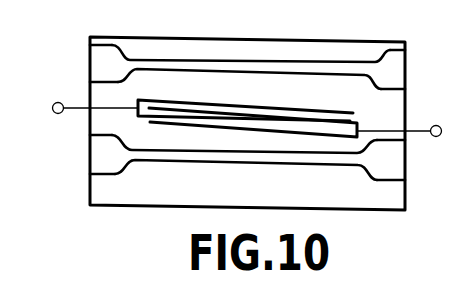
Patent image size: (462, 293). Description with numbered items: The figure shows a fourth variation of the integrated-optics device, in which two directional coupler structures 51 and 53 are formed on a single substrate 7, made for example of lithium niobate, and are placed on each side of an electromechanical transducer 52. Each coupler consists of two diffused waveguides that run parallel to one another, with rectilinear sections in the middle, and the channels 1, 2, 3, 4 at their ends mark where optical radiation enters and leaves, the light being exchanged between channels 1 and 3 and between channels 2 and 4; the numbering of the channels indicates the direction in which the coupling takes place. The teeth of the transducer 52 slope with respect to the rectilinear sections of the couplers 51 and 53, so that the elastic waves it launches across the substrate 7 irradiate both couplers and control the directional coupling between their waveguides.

The substrate 7 is at (328, 41).
The directional coupler structure 51 is at (234, 59).
The electromechanical transducer 52 is at (269, 109).
The directional coupler structure 53 is at (258, 163).
The channel 1 is at (247, 96).
The channel 2 is at (247, 132).
The channel 3 is at (246, 93).
The channel 4 is at (247, 132).